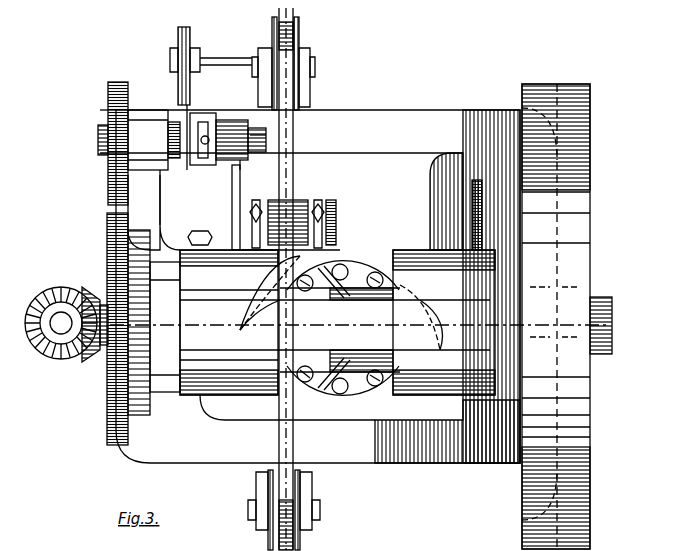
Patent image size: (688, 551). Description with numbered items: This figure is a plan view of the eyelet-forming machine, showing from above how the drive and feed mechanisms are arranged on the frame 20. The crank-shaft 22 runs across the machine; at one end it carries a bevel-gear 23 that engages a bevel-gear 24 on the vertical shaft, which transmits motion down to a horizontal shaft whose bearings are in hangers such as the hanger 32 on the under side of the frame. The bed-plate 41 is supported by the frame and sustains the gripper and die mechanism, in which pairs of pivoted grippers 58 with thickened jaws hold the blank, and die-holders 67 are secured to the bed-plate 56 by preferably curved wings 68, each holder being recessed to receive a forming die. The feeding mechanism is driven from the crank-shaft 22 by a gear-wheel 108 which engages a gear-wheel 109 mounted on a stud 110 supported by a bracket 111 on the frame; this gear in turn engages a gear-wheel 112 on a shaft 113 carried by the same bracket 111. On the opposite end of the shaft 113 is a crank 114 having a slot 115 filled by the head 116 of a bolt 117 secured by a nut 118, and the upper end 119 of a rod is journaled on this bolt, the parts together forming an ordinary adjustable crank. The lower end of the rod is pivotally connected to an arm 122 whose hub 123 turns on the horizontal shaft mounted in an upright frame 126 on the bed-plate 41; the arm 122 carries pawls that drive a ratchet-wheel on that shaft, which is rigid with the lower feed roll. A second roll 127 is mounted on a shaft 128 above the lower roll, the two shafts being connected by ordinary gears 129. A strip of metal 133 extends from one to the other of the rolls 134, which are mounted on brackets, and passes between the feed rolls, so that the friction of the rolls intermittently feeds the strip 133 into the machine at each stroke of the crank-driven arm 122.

The frame 20 is at (366, 268).
The crank-shaft 22 is at (614, 322).
The bevel-gear 23 is at (590, 246).
The bevel-gear 24 is at (48, 352).
The hanger 32 is at (232, 200).
The bed-plate 41 is at (395, 155).
The bed-plate 56 is at (352, 268).
The grippers 58 is at (330, 270).
The die-holders 67 is at (308, 386).
The wings 68 is at (370, 388).
The gear-wheel 108 is at (128, 418).
The gear-wheel 109 is at (108, 258).
The stud 110 is at (190, 240).
The bracket 111 is at (150, 195).
The gear-wheel 112 is at (108, 116).
The shaft 113 is at (98, 142).
The crank 114 is at (212, 128).
The slot 115 is at (203, 122).
The head 116 is at (228, 120).
The bolt 117 is at (266, 138).
The nut 118 is at (260, 138).
The upper end 119 is at (266, 150).
The arm 122 is at (248, 196).
The hub 123 is at (240, 240).
The upright frame 126 is at (262, 210).
The roll 127 is at (326, 214).
The shaft 128 is at (336, 226).
The gears 129 is at (330, 200).
The strip of metal 133 is at (296, 108).
The rolls 134 is at (300, 42).